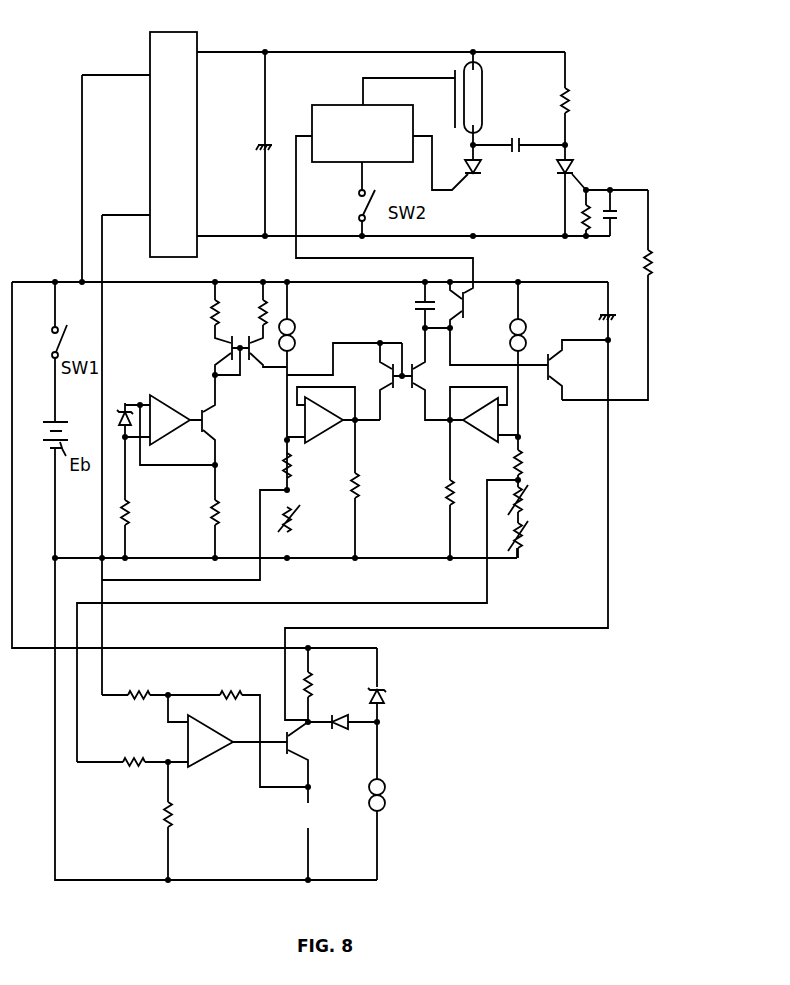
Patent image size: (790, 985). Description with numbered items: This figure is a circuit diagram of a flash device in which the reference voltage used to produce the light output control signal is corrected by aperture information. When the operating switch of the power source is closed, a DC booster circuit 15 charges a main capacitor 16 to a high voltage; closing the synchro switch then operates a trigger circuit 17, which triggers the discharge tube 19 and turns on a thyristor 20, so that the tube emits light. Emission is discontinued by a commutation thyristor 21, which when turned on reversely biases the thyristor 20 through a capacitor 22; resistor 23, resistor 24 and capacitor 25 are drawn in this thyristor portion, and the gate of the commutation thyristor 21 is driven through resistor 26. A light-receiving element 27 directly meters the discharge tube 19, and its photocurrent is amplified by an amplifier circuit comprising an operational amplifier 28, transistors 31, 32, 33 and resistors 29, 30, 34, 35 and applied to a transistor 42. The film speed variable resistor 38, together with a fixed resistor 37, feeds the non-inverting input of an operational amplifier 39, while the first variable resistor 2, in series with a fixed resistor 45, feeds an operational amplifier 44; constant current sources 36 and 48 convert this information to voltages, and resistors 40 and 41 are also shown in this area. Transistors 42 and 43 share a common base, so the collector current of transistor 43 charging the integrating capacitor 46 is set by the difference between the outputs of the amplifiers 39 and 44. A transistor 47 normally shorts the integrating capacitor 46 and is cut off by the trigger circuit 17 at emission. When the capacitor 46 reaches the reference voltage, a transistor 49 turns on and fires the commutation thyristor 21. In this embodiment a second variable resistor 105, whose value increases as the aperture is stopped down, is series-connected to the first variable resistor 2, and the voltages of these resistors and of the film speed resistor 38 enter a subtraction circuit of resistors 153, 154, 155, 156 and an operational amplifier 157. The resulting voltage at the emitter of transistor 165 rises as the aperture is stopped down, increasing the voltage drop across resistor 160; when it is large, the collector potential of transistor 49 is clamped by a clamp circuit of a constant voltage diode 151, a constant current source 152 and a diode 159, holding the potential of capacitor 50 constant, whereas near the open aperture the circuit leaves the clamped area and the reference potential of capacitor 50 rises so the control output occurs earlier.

The DC booster circuit 15 is at (176, 31).
The main capacitor 16 is at (260, 148).
The trigger circuit 17 is at (331, 106).
The discharge tube 19 is at (484, 80).
The thyristor 20 is at (482, 172).
The commutation thyristor 21 is at (574, 163).
The capacitor 22 is at (521, 138).
The resistor 23 is at (572, 100).
The resistor 24 is at (580, 213).
The capacitor 25 is at (613, 216).
The resistor 26 is at (656, 262).
The light-receiving element 27 is at (121, 409).
The operational amplifier 28 is at (175, 403).
The resistor 29 is at (130, 513).
The resistor 30 is at (208, 508).
The transistor 31 is at (213, 428).
The transistor 32 is at (228, 350).
The transistor 33 is at (256, 373).
The resistor 34 is at (210, 310).
The resistor 35 is at (260, 320).
The constant current source 36 is at (295, 333).
The fixed resistor 37 is at (283, 464).
The variable resistor 38 is at (295, 525).
The operational amplifier 39 is at (325, 437).
The resistor 40 is at (359, 487).
The resistor 41 is at (446, 486).
The transistor 42 is at (388, 367).
The transistor 43 is at (416, 386).
The operational amplifier 44 is at (479, 432).
The fixed resistor 45 is at (522, 458).
The integrating capacitor 46 is at (412, 305).
The transistor 47 is at (471, 316).
The constant current source 48 is at (521, 320).
The transistor 49 is at (548, 381).
The capacitor 50 is at (600, 315).
The first variable resistor 2 is at (528, 501).
The second variable resistor 105 is at (526, 538).
The constant voltage diode 151 is at (389, 695).
The constant current source 152 is at (387, 794).
The resistor 153 is at (143, 690).
The resistor 154 is at (229, 690).
The resistor 155 is at (130, 766).
The resistor 156 is at (173, 815).
The operational amplifier 157 is at (211, 750).
The diode 159 is at (344, 725).
The resistor 160 is at (313, 687).
The transistor 165 is at (290, 756).